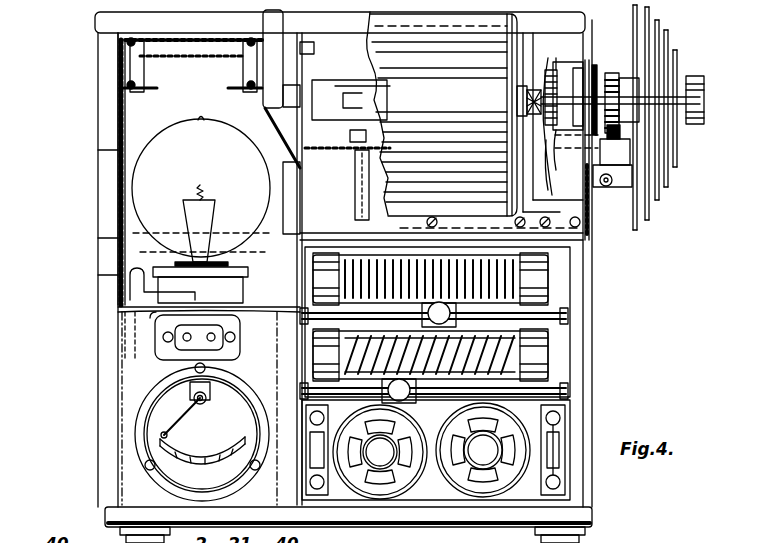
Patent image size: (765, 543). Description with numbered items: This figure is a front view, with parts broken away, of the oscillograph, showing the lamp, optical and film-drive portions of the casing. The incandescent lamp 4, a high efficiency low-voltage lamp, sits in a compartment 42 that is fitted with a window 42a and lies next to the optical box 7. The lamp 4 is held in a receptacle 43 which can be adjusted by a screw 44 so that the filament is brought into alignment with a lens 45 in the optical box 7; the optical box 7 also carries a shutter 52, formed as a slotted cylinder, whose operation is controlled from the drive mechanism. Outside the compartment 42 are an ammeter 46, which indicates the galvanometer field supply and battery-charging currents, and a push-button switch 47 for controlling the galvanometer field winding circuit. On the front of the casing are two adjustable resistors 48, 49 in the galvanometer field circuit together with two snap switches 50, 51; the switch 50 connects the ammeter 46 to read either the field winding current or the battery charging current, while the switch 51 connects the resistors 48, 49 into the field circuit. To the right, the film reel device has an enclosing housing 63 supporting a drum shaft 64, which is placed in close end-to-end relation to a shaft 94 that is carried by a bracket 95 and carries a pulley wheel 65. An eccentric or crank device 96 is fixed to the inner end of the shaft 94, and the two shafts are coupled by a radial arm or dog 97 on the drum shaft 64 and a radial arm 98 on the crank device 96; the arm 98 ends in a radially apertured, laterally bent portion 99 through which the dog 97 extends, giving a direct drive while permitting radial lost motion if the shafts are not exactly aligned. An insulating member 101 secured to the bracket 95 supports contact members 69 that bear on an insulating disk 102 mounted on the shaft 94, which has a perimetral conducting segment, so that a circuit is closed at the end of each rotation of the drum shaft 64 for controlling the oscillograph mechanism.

The incandescent lamp 4 is at (150, 176).
The optical box 7 is at (367, 78).
The compartment 42 is at (130, 118).
The window 42a is at (118, 205).
The receptacle 43 is at (238, 332).
The screw 44 is at (115, 316).
The lens 45 is at (352, 186).
The ammeter 46 is at (172, 465).
The push-button switch 47 is at (235, 358).
The adjustable resistor 48 is at (545, 278).
The adjustable resistor 49 is at (548, 348).
The snap switch 50 is at (402, 478).
The snap switch 51 is at (508, 480).
The shutter 52 is at (330, 88).
The enclosing housing 63 is at (395, 200).
The drum shaft 64 is at (512, 100).
The pulley wheel 65 is at (663, 40).
The contact members 69 is at (618, 148).
The shaft 94 is at (698, 80).
The bracket 95 is at (594, 222).
The crank device 96 is at (594, 68).
The radial arm 97 is at (552, 114).
The radial arm 98 is at (548, 188).
The laterally bent portion 99 is at (567, 159).
The insulating member 101 is at (628, 188).
The insulating disk 102 is at (620, 70).